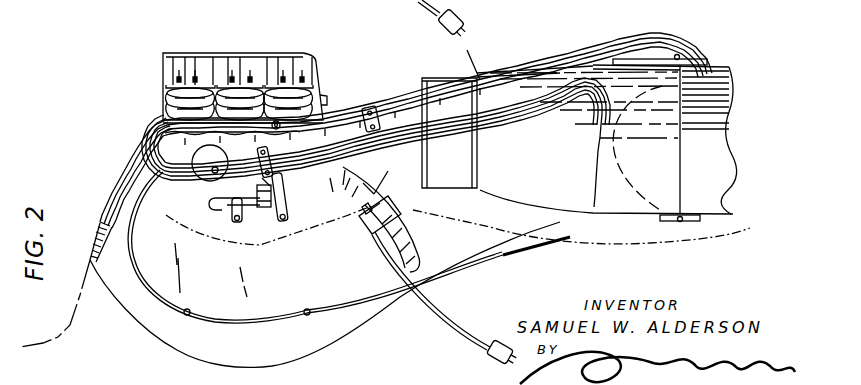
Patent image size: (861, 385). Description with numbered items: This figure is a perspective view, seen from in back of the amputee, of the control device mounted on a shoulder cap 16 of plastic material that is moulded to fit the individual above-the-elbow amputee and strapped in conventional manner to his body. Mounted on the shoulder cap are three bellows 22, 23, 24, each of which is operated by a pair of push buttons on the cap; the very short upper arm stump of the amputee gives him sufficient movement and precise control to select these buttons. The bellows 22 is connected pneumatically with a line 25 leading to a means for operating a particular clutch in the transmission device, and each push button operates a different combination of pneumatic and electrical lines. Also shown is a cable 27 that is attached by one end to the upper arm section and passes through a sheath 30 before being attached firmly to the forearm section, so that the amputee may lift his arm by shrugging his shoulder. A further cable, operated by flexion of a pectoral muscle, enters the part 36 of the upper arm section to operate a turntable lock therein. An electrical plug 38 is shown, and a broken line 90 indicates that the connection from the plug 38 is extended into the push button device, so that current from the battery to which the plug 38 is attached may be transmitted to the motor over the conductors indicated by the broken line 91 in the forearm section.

The shoulder cap 16 is at (100, 227).
The bellows 22 is at (167, 100).
The bellows 23 is at (221, 93).
The bellows 24 is at (269, 90).
The line 25 is at (412, 124).
The cable 27 is at (522, 256).
The sheath 30 is at (470, 265).
The part of the upper arm section 36 is at (444, 64).
The electrical plug 38 is at (496, 352).
The broken line 90 is at (216, 236).
The broken line 91 is at (581, 60).